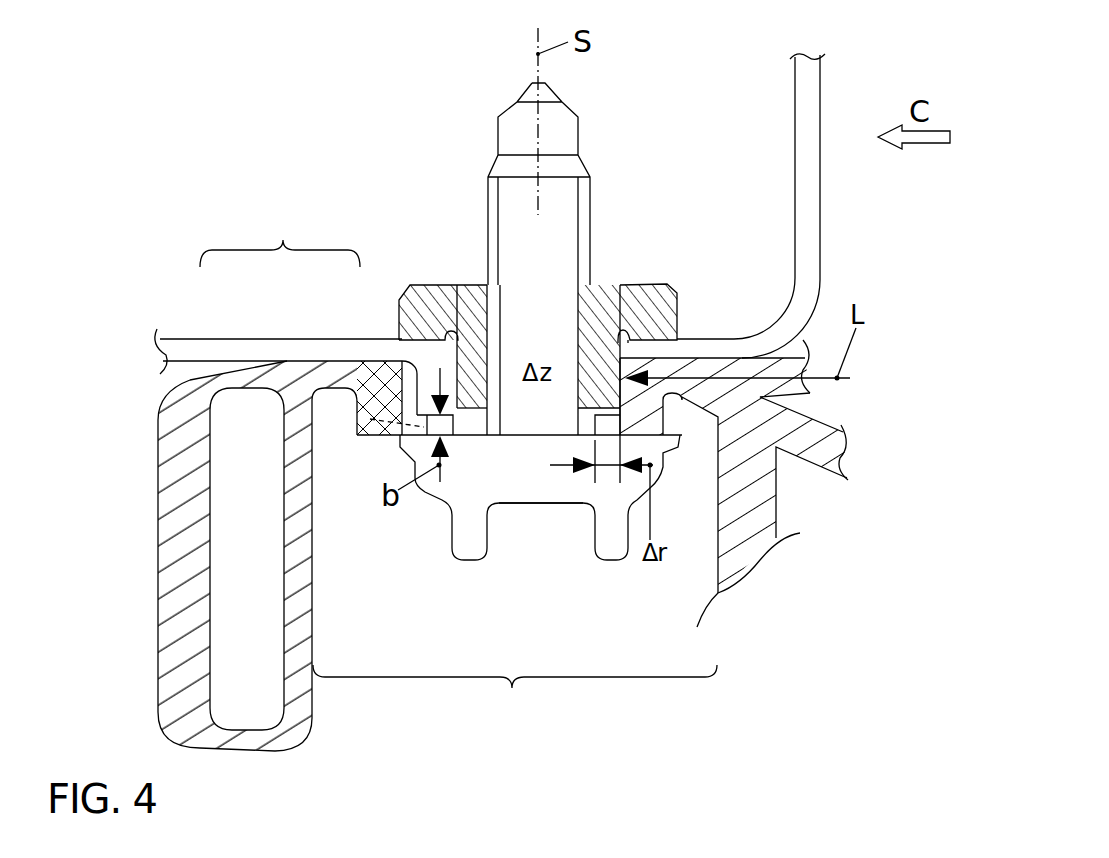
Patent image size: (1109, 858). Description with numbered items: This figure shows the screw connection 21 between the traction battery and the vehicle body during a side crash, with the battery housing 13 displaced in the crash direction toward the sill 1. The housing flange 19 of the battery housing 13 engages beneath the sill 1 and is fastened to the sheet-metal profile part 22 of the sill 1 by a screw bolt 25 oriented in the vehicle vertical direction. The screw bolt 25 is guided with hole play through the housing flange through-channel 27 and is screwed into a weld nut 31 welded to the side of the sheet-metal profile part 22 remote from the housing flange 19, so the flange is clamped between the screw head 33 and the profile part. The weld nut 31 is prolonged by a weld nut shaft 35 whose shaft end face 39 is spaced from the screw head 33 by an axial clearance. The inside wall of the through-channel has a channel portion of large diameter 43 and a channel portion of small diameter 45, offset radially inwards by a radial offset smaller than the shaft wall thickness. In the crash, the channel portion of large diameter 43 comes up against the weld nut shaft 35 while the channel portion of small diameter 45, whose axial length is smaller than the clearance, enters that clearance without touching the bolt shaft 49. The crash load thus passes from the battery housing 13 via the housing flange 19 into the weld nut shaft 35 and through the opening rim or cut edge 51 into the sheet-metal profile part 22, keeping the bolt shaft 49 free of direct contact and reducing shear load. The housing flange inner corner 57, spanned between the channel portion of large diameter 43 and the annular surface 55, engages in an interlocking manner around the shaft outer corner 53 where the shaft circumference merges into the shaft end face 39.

The sill 1 is at (832, 103).
The battery housing 13 is at (796, 510).
The housing flange 19 is at (158, 670).
The screw connection 21 is at (515, 697).
The sheet-metal profile part 22 is at (190, 339).
The screw bolt 25 is at (595, 602).
The housing flange through-channel 27 is at (280, 235).
The weld nut 31 is at (655, 305).
The screw head 33 is at (553, 487).
The weld nut shaft 35 is at (599, 380).
The shaft end face 39 is at (478, 407).
The channel portion of large diameter 43 is at (418, 415).
The channel portion of small diameter 45 is at (404, 395).
The bolt shaft 49 is at (523, 422).
The opening rim (cut edge) 51 is at (618, 349).
The shaft outer corner 53 is at (461, 407).
The annular surface 55 is at (424, 427).
The housing flange inner corner 57 is at (404, 415).